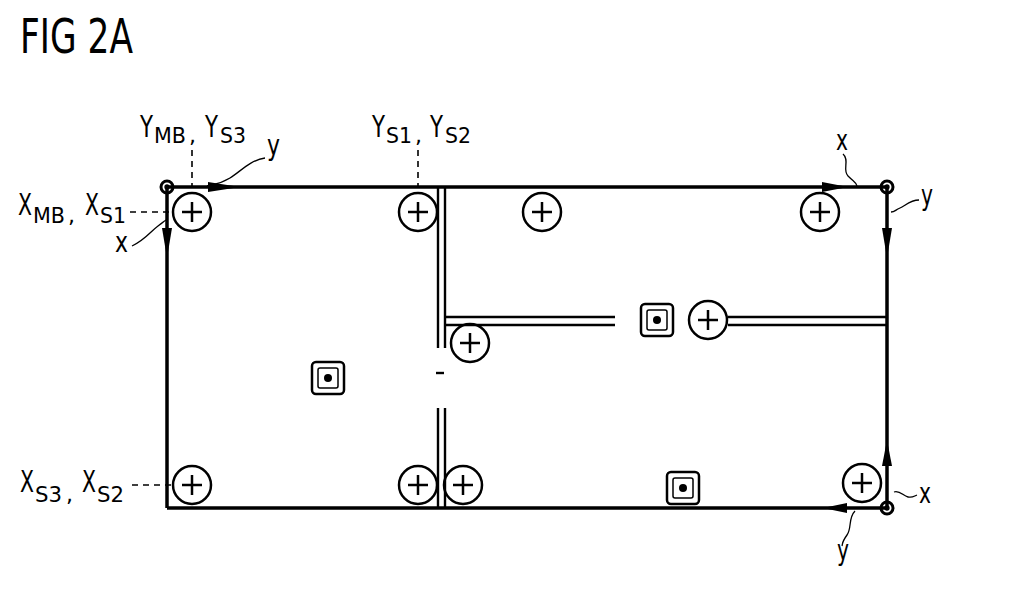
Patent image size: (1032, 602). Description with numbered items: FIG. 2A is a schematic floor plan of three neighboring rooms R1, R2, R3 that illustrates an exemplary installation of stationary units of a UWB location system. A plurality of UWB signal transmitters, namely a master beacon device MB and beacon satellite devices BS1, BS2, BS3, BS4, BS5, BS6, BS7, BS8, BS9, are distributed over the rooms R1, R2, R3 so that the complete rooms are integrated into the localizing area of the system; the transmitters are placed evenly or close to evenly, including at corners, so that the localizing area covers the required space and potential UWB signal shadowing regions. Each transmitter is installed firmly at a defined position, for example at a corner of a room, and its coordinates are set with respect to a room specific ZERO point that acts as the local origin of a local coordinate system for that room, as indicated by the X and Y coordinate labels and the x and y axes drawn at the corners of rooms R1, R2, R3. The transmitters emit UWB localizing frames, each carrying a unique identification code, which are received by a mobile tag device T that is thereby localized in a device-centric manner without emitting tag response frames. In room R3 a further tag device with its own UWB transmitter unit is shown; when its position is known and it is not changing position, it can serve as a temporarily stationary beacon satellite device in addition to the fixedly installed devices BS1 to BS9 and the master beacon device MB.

The master beacon device MB is at (212, 212).
The beacon satellite device BS1 is at (399, 212).
The beacon satellite device BS2 is at (399, 485).
The beacon satellite device BS3 is at (212, 485).
The beacon satellite device BS4 is at (562, 214).
The beacon satellite device BS5 is at (801, 213).
The beacon satellite device BS6 is at (490, 344).
The beacon satellite device BS7 is at (708, 340).
The beacon satellite device BS8 is at (843, 483).
The beacon satellite device BS9 is at (483, 485).
The mobile tag device T is at (345, 378).
The room R1 is at (258, 357).
The room R2 is at (725, 278).
The room R3 is at (733, 444).